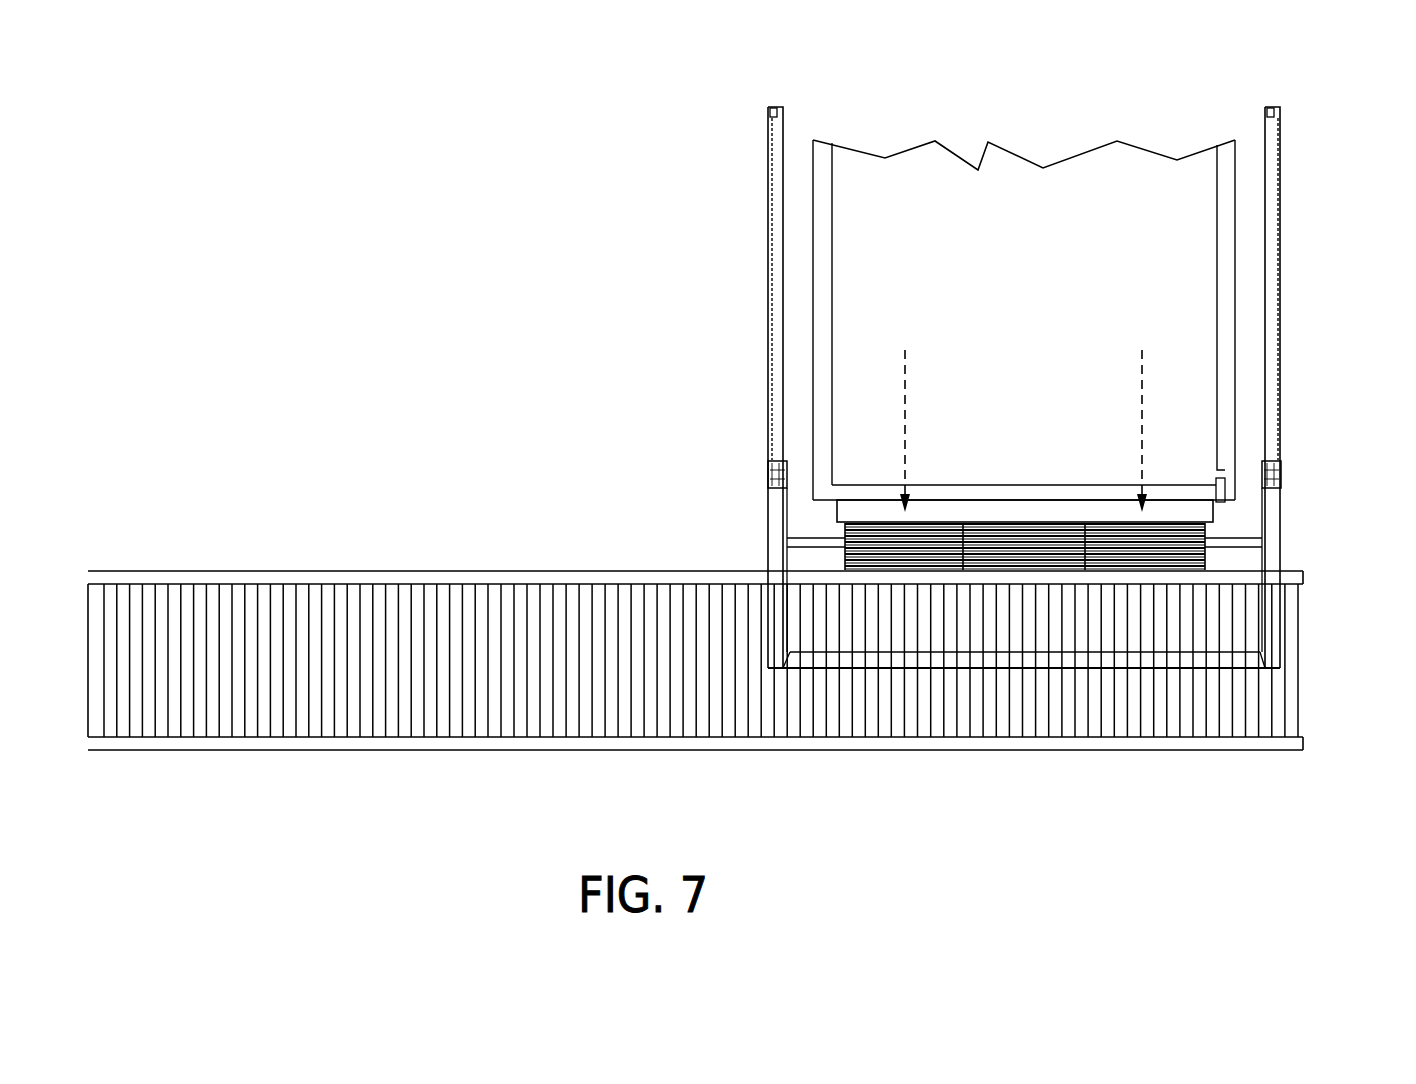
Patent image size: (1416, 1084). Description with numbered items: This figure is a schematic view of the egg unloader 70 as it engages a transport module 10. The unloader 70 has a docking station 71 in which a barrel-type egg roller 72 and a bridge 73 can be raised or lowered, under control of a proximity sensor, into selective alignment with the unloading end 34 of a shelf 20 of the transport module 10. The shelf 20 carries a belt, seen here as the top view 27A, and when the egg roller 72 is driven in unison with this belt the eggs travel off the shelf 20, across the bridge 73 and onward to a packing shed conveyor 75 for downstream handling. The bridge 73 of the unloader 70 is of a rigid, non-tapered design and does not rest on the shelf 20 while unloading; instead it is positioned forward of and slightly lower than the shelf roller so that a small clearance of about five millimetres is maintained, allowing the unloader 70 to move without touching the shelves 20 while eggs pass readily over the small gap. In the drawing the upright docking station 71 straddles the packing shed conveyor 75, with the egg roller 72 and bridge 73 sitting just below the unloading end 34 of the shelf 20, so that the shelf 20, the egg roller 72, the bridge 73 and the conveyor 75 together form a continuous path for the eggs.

The transport module 10 is at (1177, 119).
The shelf 20 is at (1004, 198).
The top view of the belt 27A is at (1003, 318).
The unloading end 34 is at (836, 500).
The unloader 70 is at (627, 531).
The docking station 71 is at (1283, 551).
The egg roller 72 is at (1192, 544).
The bridge 73 is at (1213, 524).
The packing shed conveyor 75 is at (279, 627).